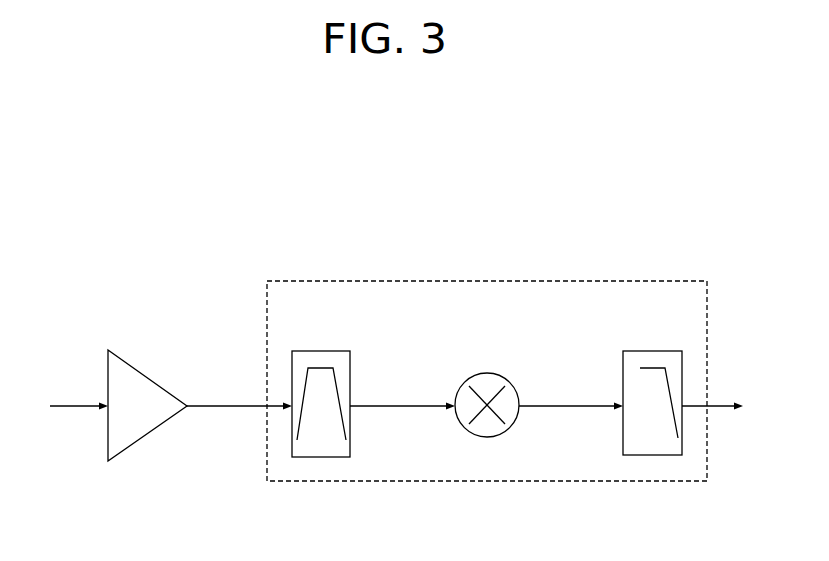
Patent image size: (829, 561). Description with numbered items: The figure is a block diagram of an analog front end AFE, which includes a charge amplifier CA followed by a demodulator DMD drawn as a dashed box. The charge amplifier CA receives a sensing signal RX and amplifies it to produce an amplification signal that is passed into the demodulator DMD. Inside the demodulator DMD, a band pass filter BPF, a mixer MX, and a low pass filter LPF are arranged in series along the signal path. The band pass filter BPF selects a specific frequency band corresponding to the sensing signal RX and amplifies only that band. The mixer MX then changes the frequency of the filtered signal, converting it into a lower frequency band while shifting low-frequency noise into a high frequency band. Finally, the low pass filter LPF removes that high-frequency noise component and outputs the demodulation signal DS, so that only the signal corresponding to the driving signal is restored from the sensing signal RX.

The analog front end AFE is at (729, 248).
The sensing signal RX is at (65, 408).
The charge amplifier CA is at (145, 376).
The demodulator DMD is at (485, 281).
The band pass filter BPF is at (320, 352).
The mixer MX is at (487, 373).
The low pass filter LPF is at (652, 351).
The demodulation signal DS is at (726, 408).